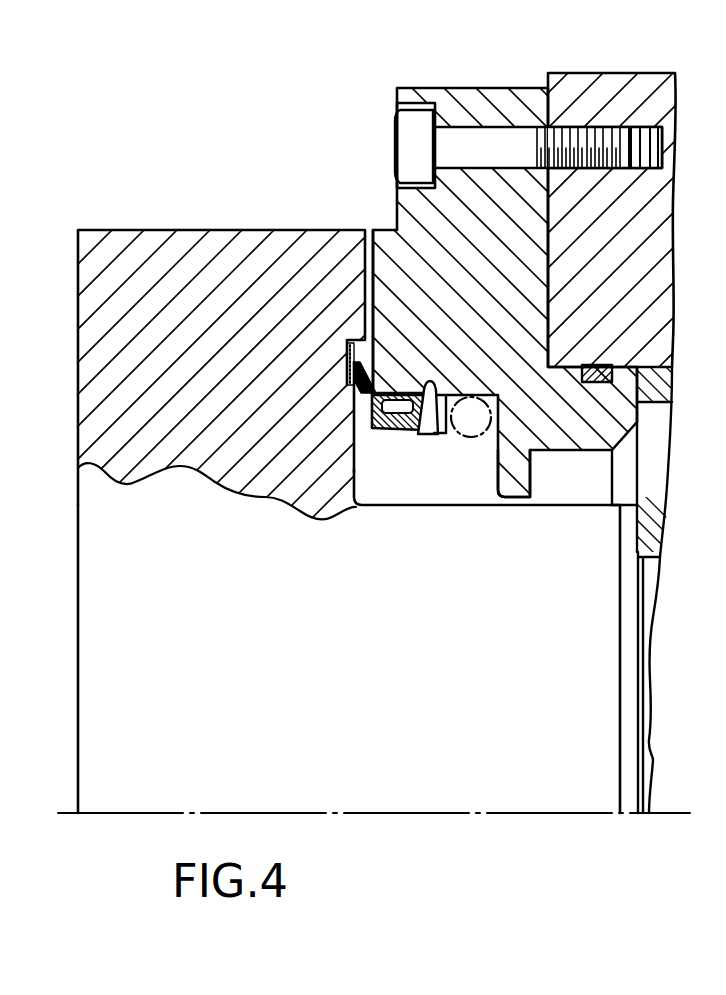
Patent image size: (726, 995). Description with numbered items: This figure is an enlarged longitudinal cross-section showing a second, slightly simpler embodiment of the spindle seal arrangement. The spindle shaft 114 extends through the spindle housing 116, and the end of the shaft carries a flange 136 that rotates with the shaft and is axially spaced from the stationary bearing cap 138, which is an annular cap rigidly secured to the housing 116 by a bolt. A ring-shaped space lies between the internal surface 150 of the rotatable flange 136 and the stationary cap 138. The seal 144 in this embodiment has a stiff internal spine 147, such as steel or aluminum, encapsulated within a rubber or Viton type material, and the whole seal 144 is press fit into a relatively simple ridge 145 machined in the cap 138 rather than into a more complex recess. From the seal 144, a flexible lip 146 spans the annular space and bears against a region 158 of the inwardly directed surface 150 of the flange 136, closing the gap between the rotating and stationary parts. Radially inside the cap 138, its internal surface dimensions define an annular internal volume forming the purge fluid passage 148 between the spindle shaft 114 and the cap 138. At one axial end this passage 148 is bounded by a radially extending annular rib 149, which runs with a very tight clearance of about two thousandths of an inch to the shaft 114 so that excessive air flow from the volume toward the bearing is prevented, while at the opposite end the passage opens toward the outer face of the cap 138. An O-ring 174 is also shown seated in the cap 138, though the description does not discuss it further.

The spindle shaft 114 is at (446, 723).
The spindle housing 116 is at (610, 88).
The flange 136 is at (165, 258).
The bearing cap 138 is at (479, 102).
The seal 144 is at (371, 433).
The ridge 145 is at (427, 434).
The flexible lip 146 is at (351, 458).
The internal spine 147 is at (390, 435).
The purge fluid passage 148 is at (424, 506).
The annular rib 149 is at (515, 494).
The internal surface 150 is at (367, 270).
The region 158 is at (345, 352).
The O-ring 174 is at (466, 441).